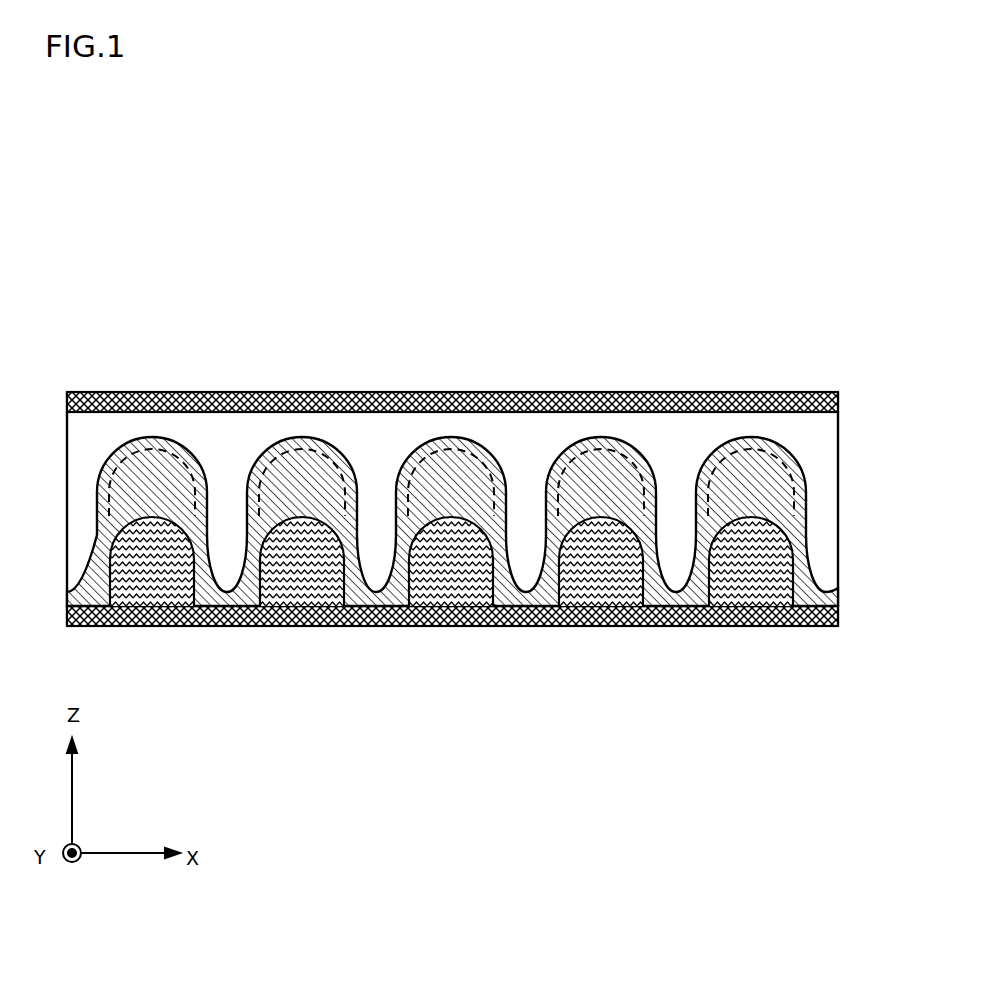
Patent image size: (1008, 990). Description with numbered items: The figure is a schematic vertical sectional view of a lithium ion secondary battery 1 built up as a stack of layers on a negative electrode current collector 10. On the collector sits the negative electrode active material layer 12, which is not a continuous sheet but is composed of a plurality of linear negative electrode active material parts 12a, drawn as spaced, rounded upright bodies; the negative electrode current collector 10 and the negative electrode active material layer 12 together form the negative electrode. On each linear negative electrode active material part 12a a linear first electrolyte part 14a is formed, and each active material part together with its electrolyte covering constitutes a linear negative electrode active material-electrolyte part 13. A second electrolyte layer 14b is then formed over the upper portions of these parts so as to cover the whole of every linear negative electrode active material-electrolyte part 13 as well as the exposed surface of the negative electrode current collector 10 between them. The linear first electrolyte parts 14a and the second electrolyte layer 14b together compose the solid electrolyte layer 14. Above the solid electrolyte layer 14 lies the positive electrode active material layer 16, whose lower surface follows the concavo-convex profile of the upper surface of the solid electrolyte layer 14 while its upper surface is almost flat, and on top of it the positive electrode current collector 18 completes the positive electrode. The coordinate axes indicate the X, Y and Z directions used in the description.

The lithium ion secondary battery 1 is at (784, 327).
The negative electrode current collector 10 is at (838, 626).
The negative electrode active material layer 12 is at (451, 635).
The linear negative electrode active material part 12a is at (462, 582).
The linear negative electrode active material-electrolyte part 13 is at (452, 625).
The solid electrolyte layer 14 is at (452, 622).
The linear first electrolyte part 14a is at (277, 497).
The second electrolyte layer 14b is at (353, 587).
The positive electrode active material layer 16 is at (219, 458).
The positive electrode current collector 18 is at (285, 405).